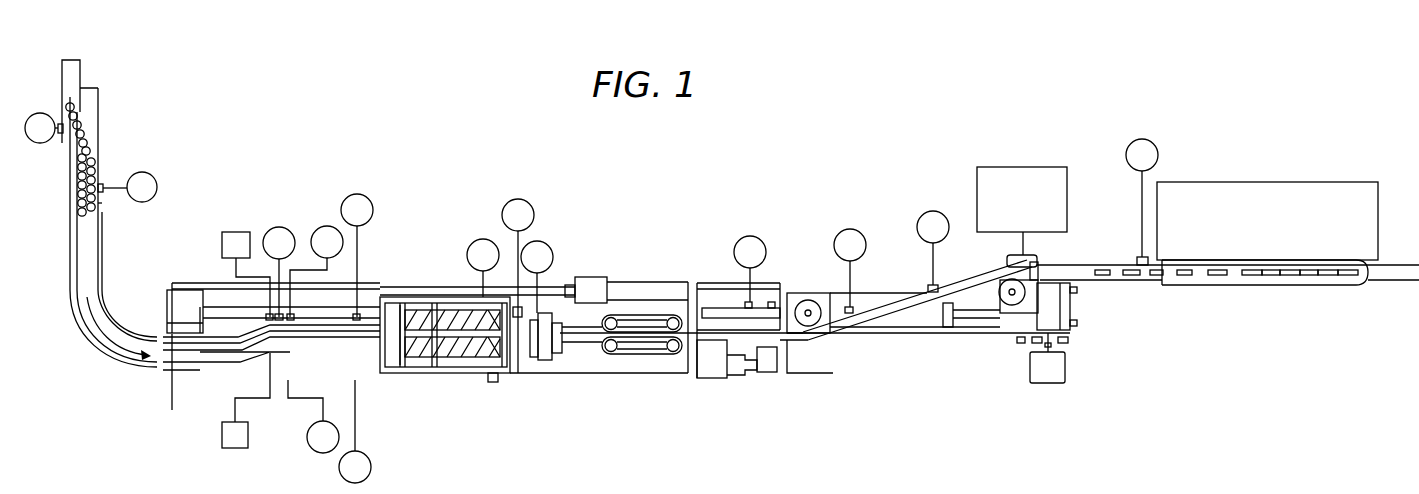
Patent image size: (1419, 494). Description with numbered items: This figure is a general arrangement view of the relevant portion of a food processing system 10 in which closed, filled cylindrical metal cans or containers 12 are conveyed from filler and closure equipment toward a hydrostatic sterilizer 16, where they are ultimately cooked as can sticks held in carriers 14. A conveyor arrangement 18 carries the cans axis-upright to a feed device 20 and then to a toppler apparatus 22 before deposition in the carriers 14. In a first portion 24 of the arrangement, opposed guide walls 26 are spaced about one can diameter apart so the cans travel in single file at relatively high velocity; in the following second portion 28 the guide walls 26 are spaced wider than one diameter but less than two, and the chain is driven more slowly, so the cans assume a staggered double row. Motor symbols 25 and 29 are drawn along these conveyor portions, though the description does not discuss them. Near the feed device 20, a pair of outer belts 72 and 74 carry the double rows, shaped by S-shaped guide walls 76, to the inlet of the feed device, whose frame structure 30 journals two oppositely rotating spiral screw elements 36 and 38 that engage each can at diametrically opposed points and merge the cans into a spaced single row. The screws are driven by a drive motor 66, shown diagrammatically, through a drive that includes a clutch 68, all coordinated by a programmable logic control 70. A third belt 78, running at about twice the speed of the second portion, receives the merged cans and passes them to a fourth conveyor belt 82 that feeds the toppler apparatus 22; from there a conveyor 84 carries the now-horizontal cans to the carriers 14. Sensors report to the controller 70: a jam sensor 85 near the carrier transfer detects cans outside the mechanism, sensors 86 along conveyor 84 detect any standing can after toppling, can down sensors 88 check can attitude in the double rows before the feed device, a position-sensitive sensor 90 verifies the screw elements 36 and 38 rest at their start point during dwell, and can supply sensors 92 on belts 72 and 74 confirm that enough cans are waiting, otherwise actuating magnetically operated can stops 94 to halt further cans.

The food processing system 10 is at (666, 231).
The containers 12 is at (82, 140).
The carriers 14 is at (1265, 286).
The sterilizer 16 is at (1378, 212).
The conveyor arrangement 18 is at (108, 277).
The feed device 20 is at (445, 341).
The toppler apparatus 22 is at (631, 361).
The first portion 24 is at (63, 88).
The motor 25 is at (38, 144).
The guide walls 26 is at (62, 63).
The second portion 28 is at (103, 203).
The motor 29 is at (154, 179).
The frame structure 30 is at (402, 374).
The screw element 36 is at (473, 358).
The screw element 38 is at (455, 317).
The drive motor 66 is at (476, 240).
The clutch 68 is at (547, 362).
The programmable logic control 70 is at (1068, 201).
The outer belt 72 is at (318, 341).
The outer belt 74 is at (322, 317).
The S-shaped guide walls 76 is at (247, 367).
The third belt 78 is at (343, 333).
The fourth conveyor belt 82 is at (577, 330).
The conveyor 84 is at (884, 310).
The jam sensor 85 is at (1157, 145).
The sensors 86 is at (842, 230).
The can down sensors 88 is at (368, 198).
The position-sensitive sensor 90 is at (525, 200).
The can supply sensors 92 is at (324, 226).
The can stops 94 is at (236, 232).